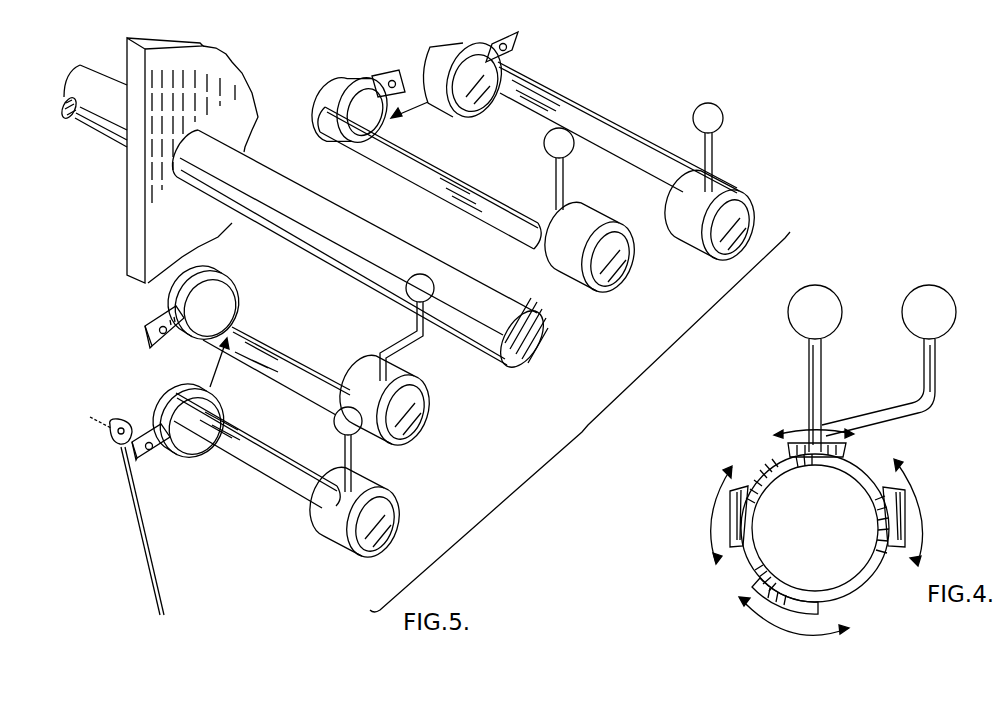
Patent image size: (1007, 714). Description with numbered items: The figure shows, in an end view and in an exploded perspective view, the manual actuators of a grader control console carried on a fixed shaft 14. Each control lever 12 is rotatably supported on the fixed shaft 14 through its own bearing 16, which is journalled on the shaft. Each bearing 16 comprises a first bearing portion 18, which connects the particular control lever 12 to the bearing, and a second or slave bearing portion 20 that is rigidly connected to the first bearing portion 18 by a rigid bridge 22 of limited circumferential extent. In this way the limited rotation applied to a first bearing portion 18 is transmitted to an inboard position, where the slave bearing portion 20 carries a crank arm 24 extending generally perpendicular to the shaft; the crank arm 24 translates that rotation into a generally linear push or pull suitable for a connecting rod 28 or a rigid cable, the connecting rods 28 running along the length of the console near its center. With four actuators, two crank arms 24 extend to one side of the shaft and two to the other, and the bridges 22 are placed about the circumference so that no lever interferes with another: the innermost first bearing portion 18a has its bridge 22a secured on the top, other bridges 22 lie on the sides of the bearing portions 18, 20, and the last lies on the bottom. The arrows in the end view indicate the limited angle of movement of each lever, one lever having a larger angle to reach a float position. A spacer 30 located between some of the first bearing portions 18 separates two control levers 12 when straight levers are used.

In FIG. 5, the control lever 12 is at (716, 152).
In FIG. 4, the control lever 12 is at (938, 372).
In FIG. 5, the fixed shaft 14 is at (528, 355).
In FIG. 4, the fixed shaft 14 is at (835, 484).
In FIG. 5, the bearing 16 is at (594, 96).
In FIG. 5, the first bearing portion 18 is at (741, 195).
In FIG. 5, the innermost first bearing portion 18a is at (316, 524).
In FIG. 5, the second or slave bearing portion 20 is at (433, 58).
In FIG. 5, the rigid bridge 22 is at (598, 127).
In FIG. 4, the rigid bridge 22 is at (850, 452).
In FIG. 5, the bridge 22a is at (266, 432).
In FIG. 5, the crank arm 24 is at (511, 41).
In FIG. 5, the connecting rod 28 is at (150, 545).
In FIG. 5, the spacer 30 is at (570, 280).